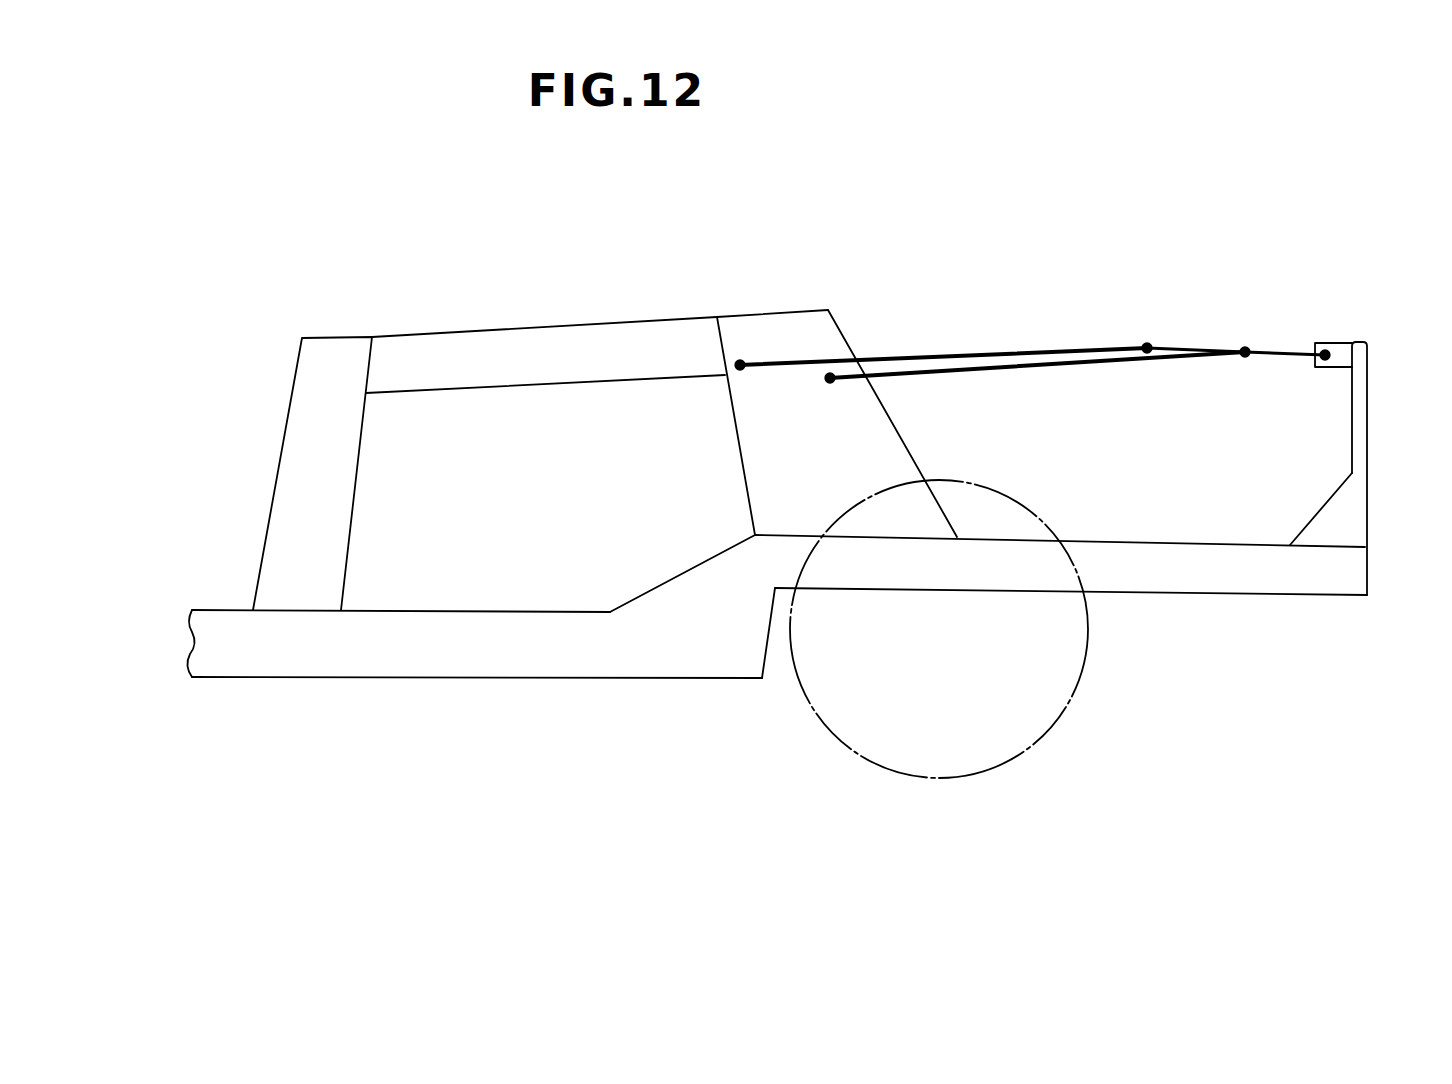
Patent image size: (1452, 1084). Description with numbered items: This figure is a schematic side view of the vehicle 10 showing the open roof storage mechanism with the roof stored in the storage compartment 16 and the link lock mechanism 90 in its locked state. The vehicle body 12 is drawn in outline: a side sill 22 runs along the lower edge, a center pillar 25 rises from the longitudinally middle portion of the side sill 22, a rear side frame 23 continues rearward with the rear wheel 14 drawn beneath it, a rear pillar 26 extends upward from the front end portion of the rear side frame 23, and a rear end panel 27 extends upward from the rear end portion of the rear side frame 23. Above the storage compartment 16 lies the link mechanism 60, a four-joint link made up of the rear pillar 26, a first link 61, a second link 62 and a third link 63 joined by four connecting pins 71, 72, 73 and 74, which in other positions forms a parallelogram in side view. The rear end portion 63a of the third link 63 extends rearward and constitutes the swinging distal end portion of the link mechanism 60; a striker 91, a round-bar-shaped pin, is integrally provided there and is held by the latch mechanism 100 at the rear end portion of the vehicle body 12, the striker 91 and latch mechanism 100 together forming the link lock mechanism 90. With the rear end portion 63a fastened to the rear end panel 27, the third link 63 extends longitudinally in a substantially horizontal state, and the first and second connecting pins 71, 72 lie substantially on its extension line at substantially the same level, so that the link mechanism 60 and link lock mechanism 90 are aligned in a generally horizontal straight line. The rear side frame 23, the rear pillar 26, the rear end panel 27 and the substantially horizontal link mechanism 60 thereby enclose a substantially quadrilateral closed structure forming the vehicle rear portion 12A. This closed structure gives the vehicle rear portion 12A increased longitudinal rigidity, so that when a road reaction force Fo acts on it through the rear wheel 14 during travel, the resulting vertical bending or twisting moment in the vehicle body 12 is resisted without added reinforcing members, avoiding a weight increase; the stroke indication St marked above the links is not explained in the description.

The vehicle 10 is at (342, 193).
The vehicle body 12 is at (228, 678).
The vehicle rear portion 12A is at (1367, 806).
The rear wheel 14 is at (1057, 723).
The storage compartment 16 is at (1302, 465).
The side sill 22 is at (425, 668).
The rear side frame 23 is at (1197, 585).
The center pillar 25 is at (290, 483).
The rear pillar 26 is at (757, 480).
The rear end panel 27 is at (1362, 390).
The link mechanism 60 is at (723, 350).
The first link 61 is at (1038, 350).
The second link 62 is at (943, 354).
The third link 63 is at (1173, 348).
The rear end portion of the third link 63a is at (1272, 358).
The first connecting pin 71 is at (830, 378).
The second connecting pin 72 is at (742, 365).
The third connecting pin 73 is at (1245, 352).
The fourth connecting pin 74 is at (1147, 348).
The link lock mechanism 90 is at (1305, 216).
The striker 91 is at (1325, 350).
The latch mechanism 100 is at (1345, 345).
The stroke direction St is at (893, 310).
The road reaction force Fo is at (938, 590).